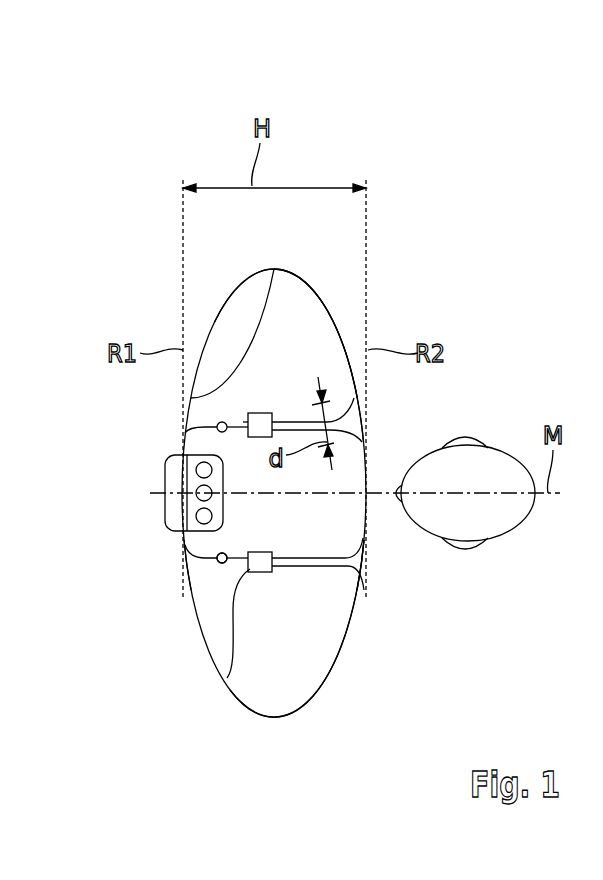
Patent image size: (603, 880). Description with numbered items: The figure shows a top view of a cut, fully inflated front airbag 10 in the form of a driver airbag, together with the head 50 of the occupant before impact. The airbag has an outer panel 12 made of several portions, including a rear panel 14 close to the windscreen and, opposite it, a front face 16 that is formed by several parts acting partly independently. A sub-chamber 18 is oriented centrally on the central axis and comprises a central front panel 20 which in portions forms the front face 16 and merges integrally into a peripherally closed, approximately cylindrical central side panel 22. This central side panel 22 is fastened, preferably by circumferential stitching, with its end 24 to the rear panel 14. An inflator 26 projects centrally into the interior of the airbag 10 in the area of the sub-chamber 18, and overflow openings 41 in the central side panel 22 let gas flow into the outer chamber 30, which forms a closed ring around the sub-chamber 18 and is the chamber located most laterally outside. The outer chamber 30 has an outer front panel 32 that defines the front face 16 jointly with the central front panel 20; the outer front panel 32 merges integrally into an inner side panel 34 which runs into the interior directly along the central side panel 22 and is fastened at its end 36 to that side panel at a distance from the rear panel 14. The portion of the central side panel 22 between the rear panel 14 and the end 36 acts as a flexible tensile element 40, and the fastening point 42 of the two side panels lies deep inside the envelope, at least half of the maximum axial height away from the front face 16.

The front airbag 10 is at (358, 688).
The outer panel 12 is at (274, 269).
The rear panel 14 is at (215, 322).
The front face 16 is at (343, 310).
The sub-chamber 18 is at (355, 468).
The central front panel 20 is at (366, 540).
The central side panel 22 is at (298, 558).
The end of central side panel 24 is at (182, 540).
The inflator 26 is at (187, 485).
The outer chamber 30 is at (310, 298).
The outer front panel 32 is at (350, 620).
The inner side panel 34 is at (302, 573).
The end of inner side panel 36 is at (227, 678).
The flexible tensile element 40 is at (207, 427).
The overflow openings 41 is at (221, 565).
The fastening point 42 is at (258, 413).
The head of the occupant 50 is at (504, 452).